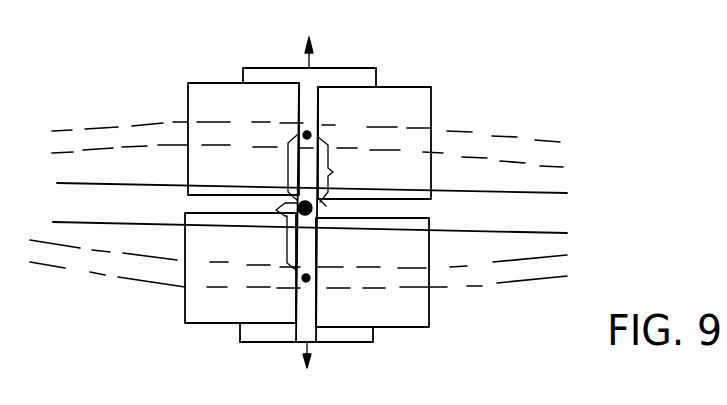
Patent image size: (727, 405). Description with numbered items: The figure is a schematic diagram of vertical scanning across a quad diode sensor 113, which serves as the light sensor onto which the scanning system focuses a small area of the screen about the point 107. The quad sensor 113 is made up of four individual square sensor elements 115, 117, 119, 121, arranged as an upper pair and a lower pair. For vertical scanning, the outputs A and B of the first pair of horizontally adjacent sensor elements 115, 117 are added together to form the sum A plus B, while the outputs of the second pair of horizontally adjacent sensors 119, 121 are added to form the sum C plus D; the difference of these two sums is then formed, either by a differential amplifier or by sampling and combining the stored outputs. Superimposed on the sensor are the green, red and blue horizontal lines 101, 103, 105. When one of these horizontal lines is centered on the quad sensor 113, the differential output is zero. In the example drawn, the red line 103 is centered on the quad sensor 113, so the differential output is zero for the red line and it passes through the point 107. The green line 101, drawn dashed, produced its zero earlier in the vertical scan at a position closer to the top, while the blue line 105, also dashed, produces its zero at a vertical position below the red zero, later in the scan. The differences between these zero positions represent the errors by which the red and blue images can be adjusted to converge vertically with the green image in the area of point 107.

The green horizontal line 101 is at (482, 138).
The red horizontal line 103 is at (519, 218).
The blue horizontal line 105 is at (507, 268).
The point 107 is at (318, 205).
The quad diode sensor 113 is at (290, 204).
The sensor element 115 is at (399, 94).
The sensor element 117 is at (193, 100).
The sensor element 119 is at (410, 305).
The sensor element 121 is at (187, 302).